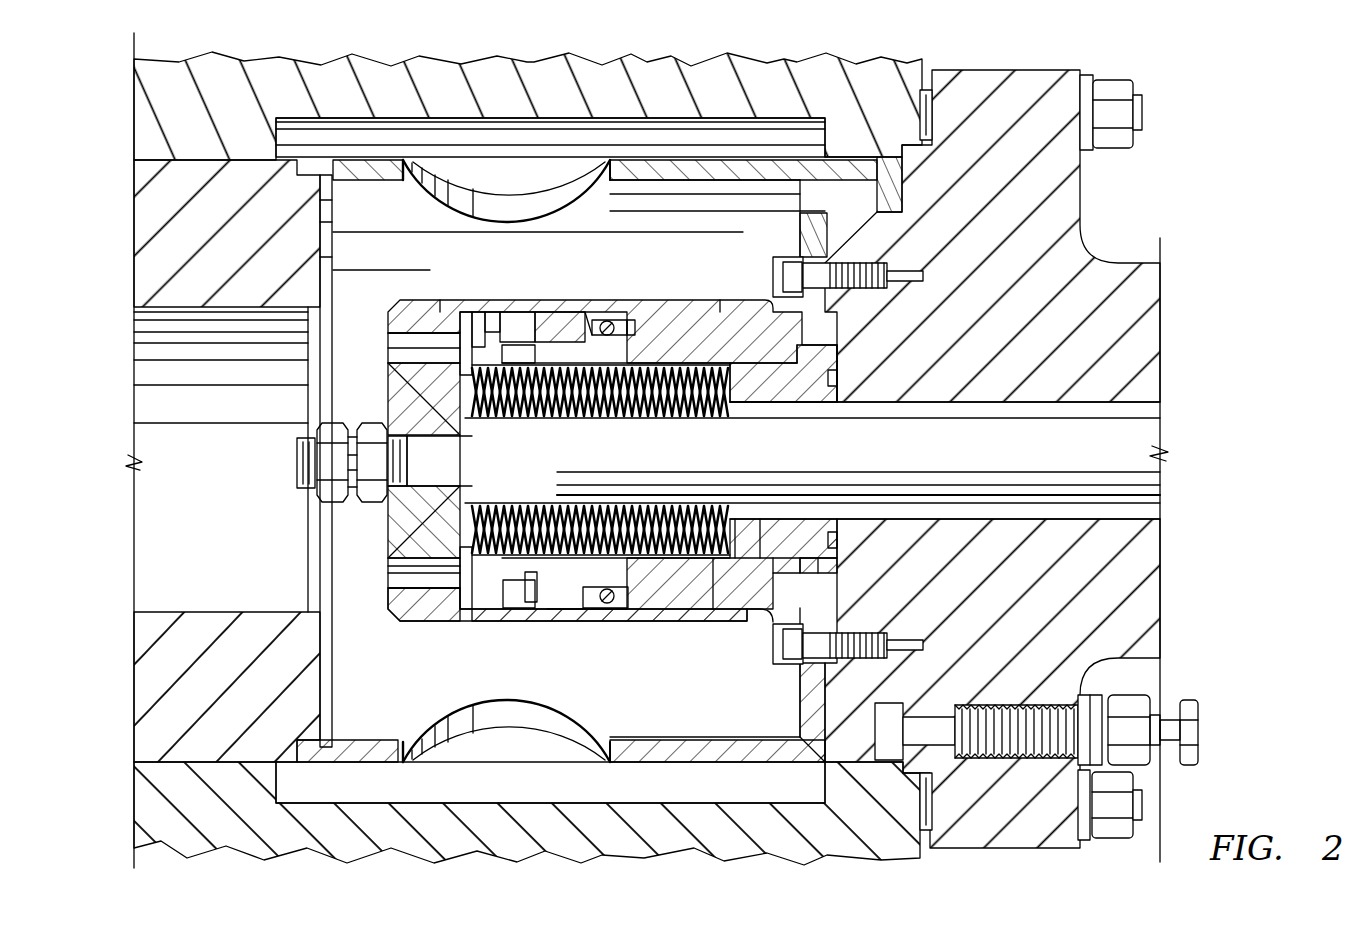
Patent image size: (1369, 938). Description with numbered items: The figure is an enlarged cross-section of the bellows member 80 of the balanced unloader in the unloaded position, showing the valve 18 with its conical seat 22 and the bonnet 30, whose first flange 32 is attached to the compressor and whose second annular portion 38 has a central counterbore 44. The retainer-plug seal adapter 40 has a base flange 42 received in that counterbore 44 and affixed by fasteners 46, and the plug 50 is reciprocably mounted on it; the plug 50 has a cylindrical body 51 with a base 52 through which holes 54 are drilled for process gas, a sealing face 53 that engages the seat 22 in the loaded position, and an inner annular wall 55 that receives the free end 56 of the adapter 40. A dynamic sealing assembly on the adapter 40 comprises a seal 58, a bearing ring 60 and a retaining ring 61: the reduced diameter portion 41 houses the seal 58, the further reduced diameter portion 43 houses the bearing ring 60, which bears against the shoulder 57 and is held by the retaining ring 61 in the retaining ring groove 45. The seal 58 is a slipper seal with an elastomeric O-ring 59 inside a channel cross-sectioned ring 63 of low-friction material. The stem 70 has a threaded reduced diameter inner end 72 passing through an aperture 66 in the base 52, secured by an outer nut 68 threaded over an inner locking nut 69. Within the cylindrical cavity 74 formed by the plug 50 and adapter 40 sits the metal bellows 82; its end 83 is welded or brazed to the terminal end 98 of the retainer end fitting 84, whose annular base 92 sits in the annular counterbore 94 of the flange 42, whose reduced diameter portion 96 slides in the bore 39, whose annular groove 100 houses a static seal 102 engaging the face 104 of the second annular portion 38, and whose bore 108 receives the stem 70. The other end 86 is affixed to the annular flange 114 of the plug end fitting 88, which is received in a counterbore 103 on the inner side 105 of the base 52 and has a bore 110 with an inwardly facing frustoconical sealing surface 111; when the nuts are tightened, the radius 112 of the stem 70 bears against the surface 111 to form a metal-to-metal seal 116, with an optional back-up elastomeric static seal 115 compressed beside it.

The valve 18 is at (172, 182).
The conical seat 22 is at (318, 613).
The bonnet 30 is at (1117, 263).
The first flange 32 is at (1045, 68).
The second annular portion 38 is at (833, 688).
The bore 39 is at (680, 560).
The retainer-plug seal adapter 40 is at (668, 320).
The reduced diameter portion 41 is at (615, 610).
The base flange 42 is at (777, 258).
The further reduced diameter portion 43 is at (555, 610).
The central counterbore 44 is at (797, 255).
The retaining ring groove 45 is at (525, 592).
The fasteners 46 is at (790, 278).
The plug 50 is at (440, 310).
The cylindrical body 51 is at (722, 330).
The base 52 is at (397, 382).
The sealing face 53 is at (396, 313).
The holes 54 is at (394, 348).
The inner annular wall 55 is at (492, 315).
The free end 56 is at (512, 347).
The shoulder 57 is at (580, 600).
The seal 58 is at (608, 318).
The elastomeric O-ring 59 is at (605, 328).
The bearing ring 60 is at (560, 320).
The retaining ring 61 is at (525, 342).
The channel cross-sectioned ring 63 is at (628, 330).
The aperture 66 is at (405, 440).
The outer nut 68 is at (327, 430).
The inner locking nut 69 is at (372, 427).
The stem 70 is at (997, 435).
The threaded reduced diameter inner end 72 is at (297, 465).
The cylindrical cavity 74 is at (498, 604).
The bellows member 80 is at (649, 565).
The metal bellows 82 is at (687, 365).
The end of bellows 83 is at (713, 563).
The retainer end fitting 84 is at (762, 560).
The end of bellows 86 is at (467, 603).
The plug end fitting 88 is at (440, 545).
The annular base 92 is at (808, 562).
The annular counterbore 94 is at (837, 568).
The reduced diameter portion 96 is at (773, 562).
The terminal end 98 is at (735, 552).
The annular groove 100 is at (830, 388).
The static seal 102 is at (840, 380).
The counterbore 103 is at (440, 545).
The face 104 is at (830, 530).
The inner side 105 is at (422, 543).
The bore 108 is at (797, 405).
The bore 110 is at (405, 492).
The frustoconical sealing surface 111 is at (470, 503).
The radius 112 is at (470, 425).
The annular flange 114 is at (466, 310).
The back-up elastomeric static seal 115 is at (457, 490).
The metal-to-metal seal 116 is at (470, 497).